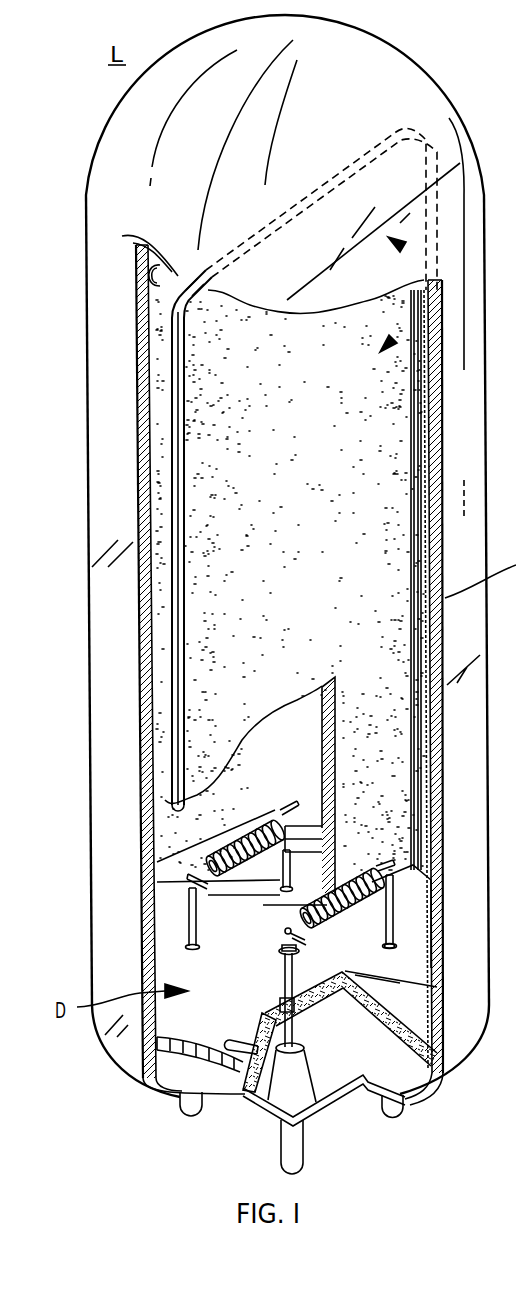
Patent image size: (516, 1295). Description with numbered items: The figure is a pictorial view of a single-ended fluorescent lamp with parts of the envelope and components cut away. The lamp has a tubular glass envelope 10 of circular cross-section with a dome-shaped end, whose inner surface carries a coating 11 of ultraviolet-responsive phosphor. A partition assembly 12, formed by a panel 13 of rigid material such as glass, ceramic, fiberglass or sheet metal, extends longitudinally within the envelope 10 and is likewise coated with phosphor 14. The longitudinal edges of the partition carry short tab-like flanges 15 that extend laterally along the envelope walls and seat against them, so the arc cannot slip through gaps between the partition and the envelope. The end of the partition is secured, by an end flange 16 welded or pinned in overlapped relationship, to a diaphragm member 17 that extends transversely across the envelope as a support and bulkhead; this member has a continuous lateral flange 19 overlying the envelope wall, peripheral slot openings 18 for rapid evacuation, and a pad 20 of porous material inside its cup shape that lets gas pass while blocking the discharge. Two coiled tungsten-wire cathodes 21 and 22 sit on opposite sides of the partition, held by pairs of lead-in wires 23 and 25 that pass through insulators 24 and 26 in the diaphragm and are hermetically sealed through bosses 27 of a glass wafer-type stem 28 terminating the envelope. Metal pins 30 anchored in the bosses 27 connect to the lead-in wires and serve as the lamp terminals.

The tubular glass envelope 10 is at (105, 505).
The phosphor coating 11 is at (152, 280).
The partition assembly 12 is at (393, 339).
The panel 13 is at (187, 285).
The phosphor 14 is at (139, 251).
The flanges 15 is at (430, 138).
The end flange 16 is at (313, 900).
The diaphragm member 17 is at (180, 1015).
The slot openings 18 is at (310, 840).
The flange 19 is at (232, 1082).
The pad of porous material 20 is at (403, 1037).
The cathode 21 is at (250, 825).
The cathode 22 is at (368, 905).
The lead-in wires 23 is at (280, 877).
The insulator 24 is at (290, 880).
The lead-in wires 25 is at (392, 924).
The insulator 26 is at (392, 946).
The bosses 27 is at (300, 1073).
The stem 28 is at (335, 1080).
The pins 30 is at (190, 1108).